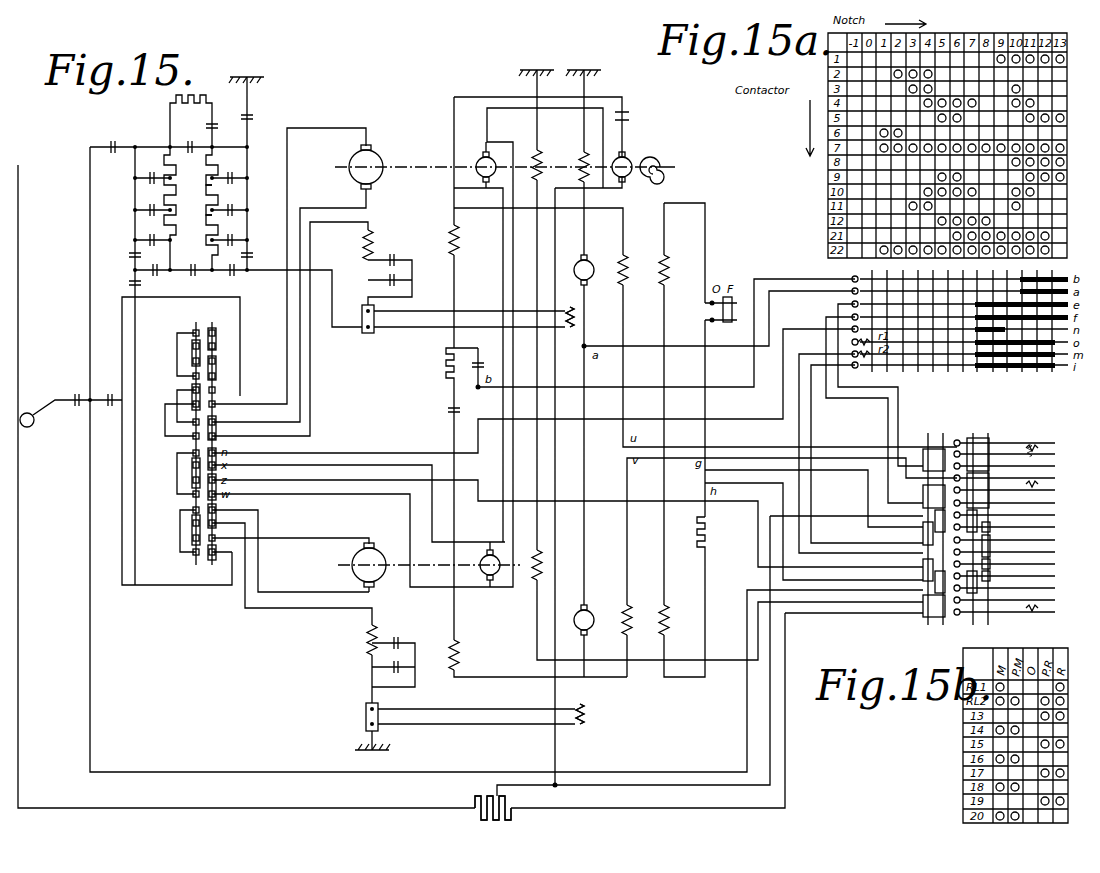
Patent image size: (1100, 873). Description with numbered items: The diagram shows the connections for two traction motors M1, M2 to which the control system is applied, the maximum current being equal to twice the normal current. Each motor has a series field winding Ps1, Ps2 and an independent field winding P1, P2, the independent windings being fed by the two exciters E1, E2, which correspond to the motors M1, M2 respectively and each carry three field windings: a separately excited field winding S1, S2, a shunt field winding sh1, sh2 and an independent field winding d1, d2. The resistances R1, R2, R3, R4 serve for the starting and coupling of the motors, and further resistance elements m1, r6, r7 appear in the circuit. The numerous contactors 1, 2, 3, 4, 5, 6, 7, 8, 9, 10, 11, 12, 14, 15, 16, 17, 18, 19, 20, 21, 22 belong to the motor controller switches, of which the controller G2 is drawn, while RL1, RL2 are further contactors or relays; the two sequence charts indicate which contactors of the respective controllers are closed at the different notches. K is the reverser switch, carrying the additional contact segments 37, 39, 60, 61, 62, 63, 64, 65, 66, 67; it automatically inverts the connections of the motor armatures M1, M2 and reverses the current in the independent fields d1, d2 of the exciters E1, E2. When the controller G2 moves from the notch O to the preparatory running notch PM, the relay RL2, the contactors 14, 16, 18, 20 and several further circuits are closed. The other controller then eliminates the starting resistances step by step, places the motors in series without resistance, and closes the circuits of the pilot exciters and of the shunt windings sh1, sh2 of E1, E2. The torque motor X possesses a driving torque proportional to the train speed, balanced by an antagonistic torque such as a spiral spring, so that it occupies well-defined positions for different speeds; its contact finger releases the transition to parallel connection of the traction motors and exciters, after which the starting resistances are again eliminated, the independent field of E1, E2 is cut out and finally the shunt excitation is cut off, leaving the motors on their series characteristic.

The contactor 1 is at (252, 116).
The contactor 2 is at (187, 141).
The contactor 3 is at (235, 184).
The contactor 4 is at (235, 216).
The contactor 5 is at (225, 245).
The contactor 6 is at (216, 121).
The contactor 7 is at (167, 383).
The contactor 8 is at (167, 254).
The contactor 9 is at (157, 245).
The contactor 10 is at (135, 211).
The contactor 11 is at (135, 180).
The contactor 12 is at (195, 275).
The contactor 14 is at (240, 275).
The contactor 15 is at (125, 255).
The contactor 16 is at (161, 275).
The contactor 17 is at (399, 251).
The contactor 18 is at (385, 286).
The contactor 19 is at (404, 637).
The contactor 20 is at (385, 673).
The contactor 21 is at (471, 365).
The contactor 22 is at (443, 410).
The controller contact 37 is at (213, 333).
The controller contact 39 is at (213, 361).
The controller contact 60 is at (179, 397).
The controller contact 61 is at (292, 264).
The controller contact 62 is at (292, 312).
The controller contact 63 is at (292, 329).
The controller contact 64 is at (293, 550).
The controller contact 65 is at (293, 564).
The controller contact 66 is at (275, 541).
The controller contact 67 is at (181, 574).
The reverser switch K is at (184, 434).
The motor controller switch G2 is at (997, 517).
The traction motor M1 is at (375, 167).
The traction motor M2 is at (369, 553).
The independent field winding P1 is at (472, 200).
The independent field winding P2 is at (474, 610).
The exciter E1 is at (579, 264).
The exciter E2 is at (591, 613).
The contactor RL1 is at (50, 410).
The contactor RL2 is at (418, 312).
The separately excited field winding S1 is at (566, 326).
The separately excited field winding S2 is at (594, 714).
The series field winding Ps1 is at (349, 245).
The series field winding Ps2 is at (354, 640).
The shunt field winding sh1 is at (633, 263).
The shunt field winding sh2 is at (636, 612).
The independent field winding d1 is at (675, 270).
The independent field winding d2 is at (675, 620).
The resistance m1 is at (547, 160).
The torque motor X is at (623, 162).
The resistance R1 is at (206, 242).
The resistance R2 is at (206, 200).
The resistance R3 is at (206, 166).
The resistance R4 is at (177, 208).
The resistance r6 is at (493, 815).
The resistance r7 is at (714, 535).